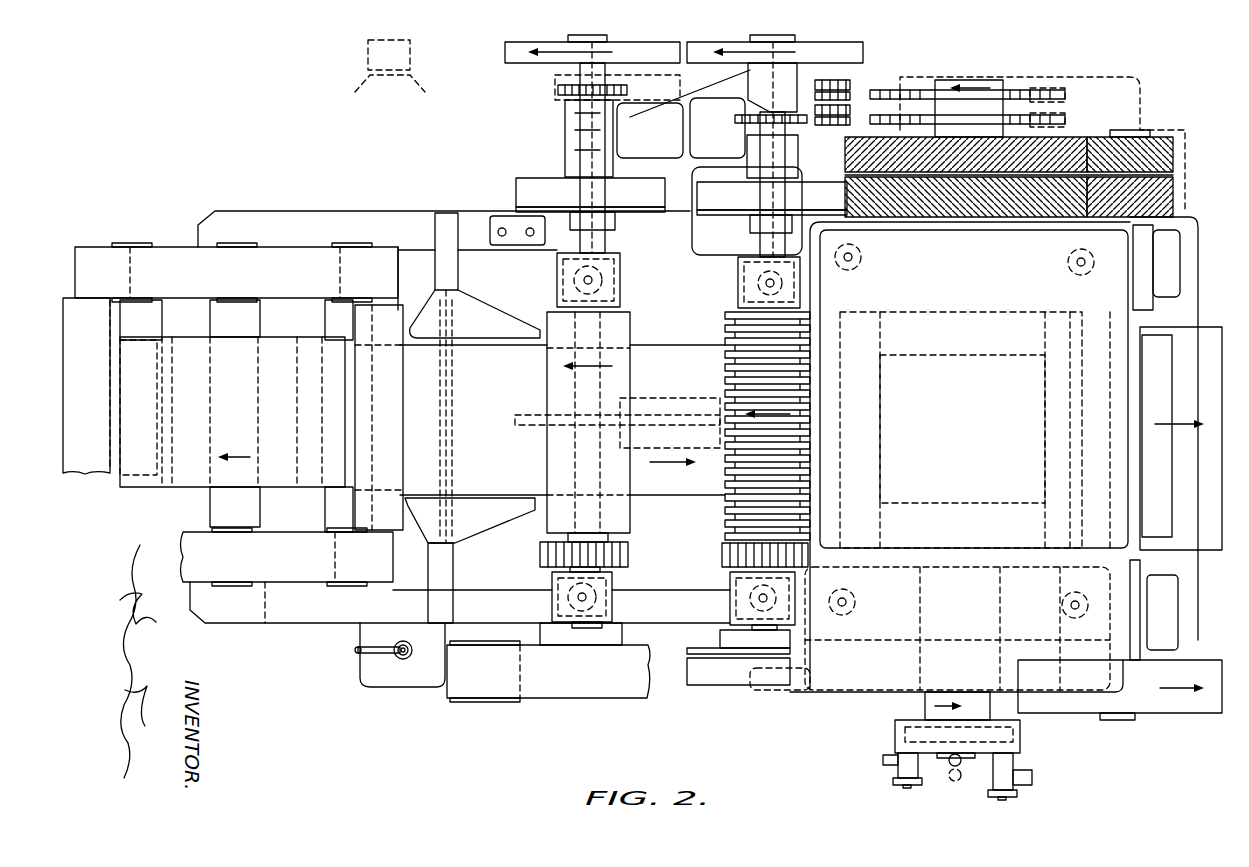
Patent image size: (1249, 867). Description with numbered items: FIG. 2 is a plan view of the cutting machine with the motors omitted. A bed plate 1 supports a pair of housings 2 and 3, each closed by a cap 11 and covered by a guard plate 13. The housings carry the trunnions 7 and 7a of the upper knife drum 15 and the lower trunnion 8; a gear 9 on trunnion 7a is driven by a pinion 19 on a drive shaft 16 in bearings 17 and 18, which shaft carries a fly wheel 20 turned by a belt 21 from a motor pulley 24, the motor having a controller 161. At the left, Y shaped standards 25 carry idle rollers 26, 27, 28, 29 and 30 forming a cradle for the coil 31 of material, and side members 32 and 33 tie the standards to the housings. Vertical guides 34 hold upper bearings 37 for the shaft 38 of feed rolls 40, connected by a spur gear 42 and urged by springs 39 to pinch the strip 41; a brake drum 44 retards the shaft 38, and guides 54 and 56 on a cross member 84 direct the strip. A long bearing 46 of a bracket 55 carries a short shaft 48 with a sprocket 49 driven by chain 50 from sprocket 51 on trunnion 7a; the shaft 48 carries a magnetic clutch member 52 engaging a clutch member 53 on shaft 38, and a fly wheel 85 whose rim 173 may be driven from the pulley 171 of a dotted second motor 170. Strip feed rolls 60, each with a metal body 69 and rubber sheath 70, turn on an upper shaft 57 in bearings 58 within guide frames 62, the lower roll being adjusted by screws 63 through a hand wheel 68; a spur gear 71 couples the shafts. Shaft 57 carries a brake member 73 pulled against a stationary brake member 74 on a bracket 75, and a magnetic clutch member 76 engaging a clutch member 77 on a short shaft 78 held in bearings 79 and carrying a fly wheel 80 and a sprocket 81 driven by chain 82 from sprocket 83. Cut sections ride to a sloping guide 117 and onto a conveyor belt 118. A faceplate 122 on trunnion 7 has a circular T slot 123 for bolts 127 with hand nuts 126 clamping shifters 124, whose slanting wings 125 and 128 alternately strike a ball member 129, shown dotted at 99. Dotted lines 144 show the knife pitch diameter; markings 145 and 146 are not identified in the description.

The bed plate 1 is at (1200, 600).
The housing 2 is at (1162, 612).
The housing 3 is at (1166, 263).
The trunnion 7 is at (920, 618).
The trunnion 7a is at (972, 80).
The trunnion 8 is at (957, 706).
The gear 9 is at (1080, 140).
The cap 11 is at (838, 266).
The cover or guard plate 13 is at (974, 389).
The upper drum 15 is at (880, 403).
The drive shaft 16 is at (1136, 133).
The bearing 17 is at (1150, 592).
The bearing 18 is at (1153, 286).
The pinion 19 is at (1175, 160).
The fly wheel 20 is at (1190, 713).
The belt 21 is at (548, 671).
The pulley 24 is at (496, 703).
The Y shaped standards 25 is at (236, 414).
The idle roller 26 is at (86, 386).
The idle roller 27 is at (141, 387).
The idle roller 28 is at (235, 413).
The idle roller 29 is at (339, 416).
The idle roller 30 is at (379, 417).
The coil 31 is at (232, 412).
The side member 32 is at (388, 602).
The side member 33 is at (342, 230).
The vertical guide members 34 is at (557, 290).
The upper bearings 37 is at (620, 277).
The shaft 38 is at (575, 386).
The springs 39 is at (600, 590).
The feed rolls 40 is at (630, 331).
The strip 41 is at (670, 407).
The spur gear 42 is at (540, 557).
The brake drum 44 is at (606, 646).
The long bearing 46 is at (565, 123).
The short shaft 48 is at (580, 68).
The sprocket 49 is at (558, 90).
The chain 50 is at (856, 86).
The sprocket 51 is at (1050, 90).
The magnetic clutch member 52 is at (552, 182).
The coacting clutch member 53 is at (516, 209).
The guide 54 is at (475, 314).
The bracket 55 is at (650, 130).
The guide 56 is at (470, 520).
The upper shaft 57 is at (725, 531).
The bearings 58 is at (738, 298).
The strip feed rolls 60 is at (735, 340).
The guide frame 62 is at (806, 290).
The vertical screws 63 is at (755, 640).
The hand wheel 68 is at (760, 691).
The body portion 69 is at (812, 430).
The elastic cover or sheath 70 is at (727, 379).
The spur gear 71 is at (722, 559).
The brake member 73 is at (706, 648).
The stationary brake member 74 is at (705, 686).
The bracket 75 is at (875, 630).
The magnetic clutch member 76 is at (706, 215).
The second magnetic clutch member 77 is at (808, 195).
The short shaft 78 is at (765, 152).
The bearings 79 is at (748, 70).
The small fly wheel 80 is at (863, 52).
The sprocket 81 is at (800, 124).
The chain 82 is at (810, 85).
The sprocket 83 is at (1068, 117).
The cross member 84 is at (458, 278).
The small fly wheel 85 is at (505, 48).
The outer position of ball member 99 is at (958, 782).
The sloping guide 117 is at (1160, 398).
The conveyor belt 118 is at (1197, 471).
The faceplate 122 is at (895, 722).
The circular T slot 123 is at (905, 737).
The shifter 124 is at (1013, 766).
The slanting wing 125 is at (883, 763).
The hand nut 126 is at (1017, 793).
The bolt 127 is at (893, 782).
The slanting wing 128 is at (1032, 777).
The ball shaped member 129 is at (950, 762).
The dotted lines 144 is at (845, 470).
The direction arrow 145 is at (673, 478).
The guide 146 is at (530, 418).
The controller 161 is at (375, 682).
The second motor 170 is at (390, 94).
The pulley 171 is at (368, 55).
The rim 173 is at (617, 89).